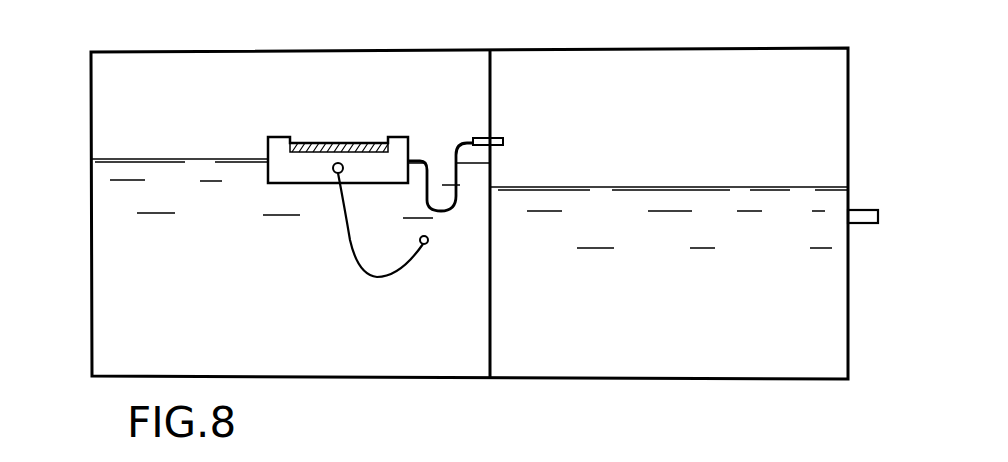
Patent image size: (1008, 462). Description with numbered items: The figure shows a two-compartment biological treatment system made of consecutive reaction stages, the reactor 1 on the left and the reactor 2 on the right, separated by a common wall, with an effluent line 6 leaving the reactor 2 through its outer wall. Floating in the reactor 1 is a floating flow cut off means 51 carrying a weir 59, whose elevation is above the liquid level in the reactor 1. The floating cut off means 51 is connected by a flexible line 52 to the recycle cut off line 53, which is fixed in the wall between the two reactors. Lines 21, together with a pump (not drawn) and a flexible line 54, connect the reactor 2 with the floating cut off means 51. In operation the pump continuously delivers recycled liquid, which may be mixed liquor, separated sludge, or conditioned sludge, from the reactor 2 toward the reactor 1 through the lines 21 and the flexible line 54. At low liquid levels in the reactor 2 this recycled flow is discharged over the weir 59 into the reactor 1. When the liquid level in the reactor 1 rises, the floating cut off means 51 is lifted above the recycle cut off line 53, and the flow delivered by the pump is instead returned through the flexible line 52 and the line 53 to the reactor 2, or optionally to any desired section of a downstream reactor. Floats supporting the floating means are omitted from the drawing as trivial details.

The reactor 1 is at (305, 51).
The reactor 2 is at (538, 50).
The effluent line 6 is at (863, 210).
The lines 21 is at (427, 244).
The floating flow cut off means 51 is at (275, 184).
The flexible line 52 is at (452, 158).
The recycle cut off line 53 is at (500, 135).
The flexible line 54 is at (355, 270).
The weir 59 is at (318, 143).